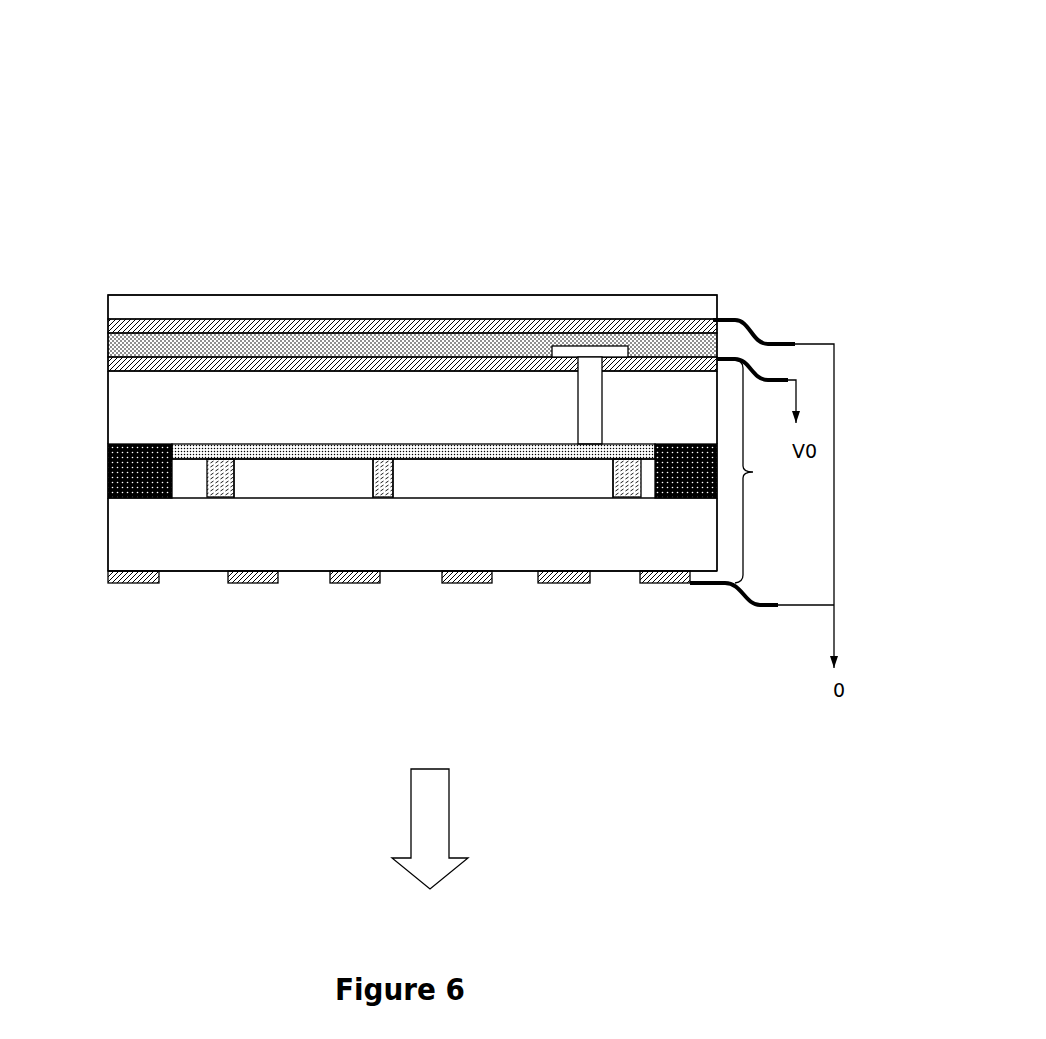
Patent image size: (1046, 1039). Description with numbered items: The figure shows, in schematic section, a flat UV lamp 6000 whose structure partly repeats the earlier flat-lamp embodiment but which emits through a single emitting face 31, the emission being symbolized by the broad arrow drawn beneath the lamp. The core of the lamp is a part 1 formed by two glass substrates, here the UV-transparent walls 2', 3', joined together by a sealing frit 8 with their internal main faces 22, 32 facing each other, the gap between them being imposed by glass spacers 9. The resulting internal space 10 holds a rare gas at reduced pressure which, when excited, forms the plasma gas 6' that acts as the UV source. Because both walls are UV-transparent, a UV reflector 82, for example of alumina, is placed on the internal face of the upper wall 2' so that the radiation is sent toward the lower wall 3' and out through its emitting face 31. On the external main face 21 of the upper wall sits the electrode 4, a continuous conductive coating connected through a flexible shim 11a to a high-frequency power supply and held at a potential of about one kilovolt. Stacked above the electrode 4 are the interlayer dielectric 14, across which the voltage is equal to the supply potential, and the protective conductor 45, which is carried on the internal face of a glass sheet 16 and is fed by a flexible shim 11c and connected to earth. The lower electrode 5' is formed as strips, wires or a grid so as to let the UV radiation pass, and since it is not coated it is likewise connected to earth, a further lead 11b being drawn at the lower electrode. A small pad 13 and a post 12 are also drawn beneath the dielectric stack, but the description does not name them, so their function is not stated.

The UV lamp structure 6000 is at (623, 123).
The glass sheet 16 is at (222, 310).
The protective conductor 45 is at (700, 318).
The interlayer dielectric 14 is at (143, 345).
The external main face 21 is at (158, 368).
The electrode 4 is at (650, 370).
The contact pad 13 is at (573, 345).
The conductive pillar 12 is at (596, 385).
The wall 2' is at (369, 407).
The sealing frit 8 is at (108, 490).
The UV reflector 82 is at (308, 452).
The internal main face 22 is at (432, 450).
The glass spacers 9 is at (373, 485).
The internal space 10 is at (556, 482).
The internal main face 32 is at (426, 495).
The plasma gas 6' is at (504, 544).
The wall 3' is at (393, 567).
The emitting face 31 is at (632, 575).
The electrode 5' is at (399, 633).
The flexible shim 11c is at (737, 313).
The flexible shim 11a is at (772, 376).
The lower electrode lead 11b is at (747, 597).
The part 1 is at (755, 471).